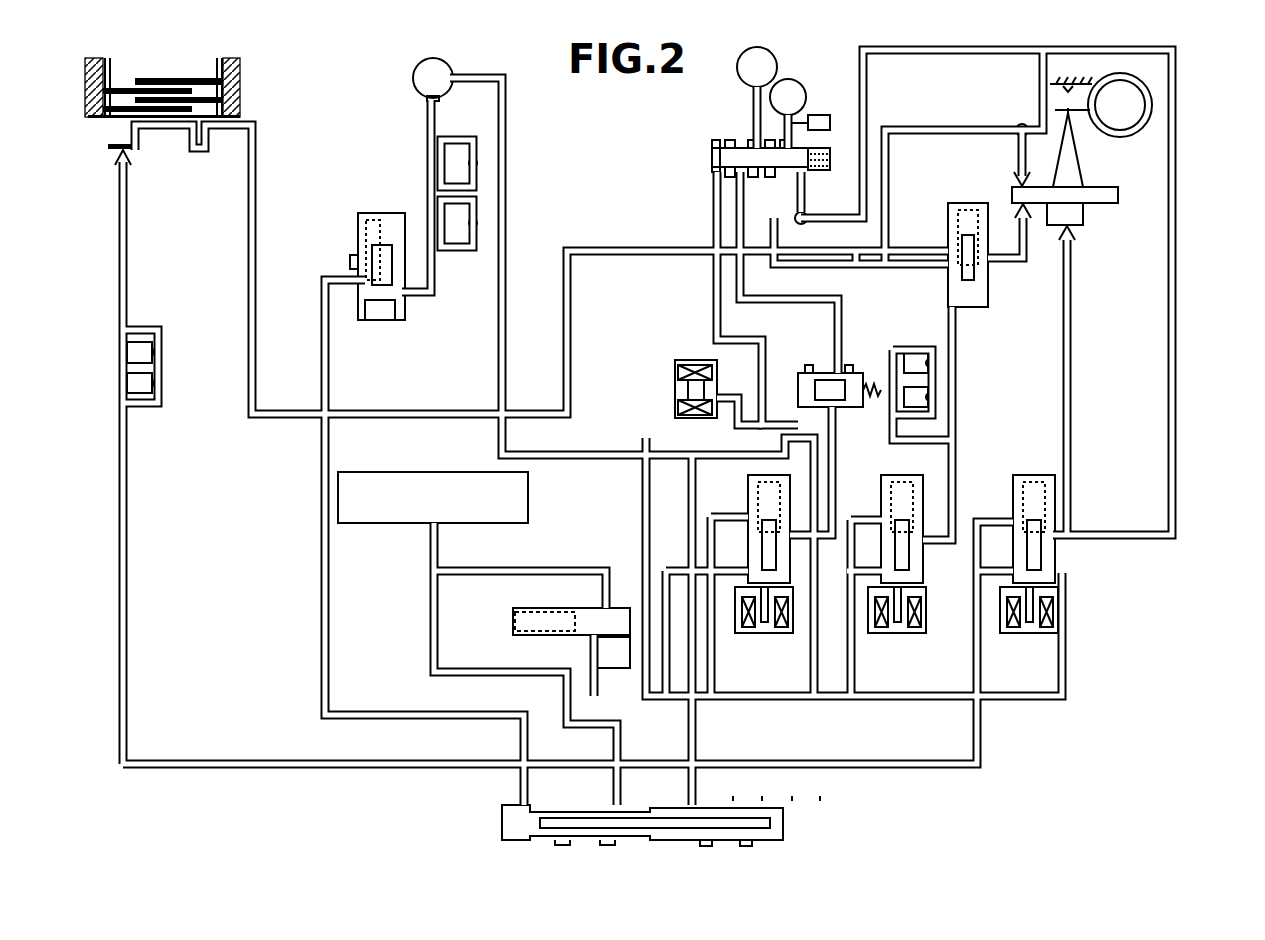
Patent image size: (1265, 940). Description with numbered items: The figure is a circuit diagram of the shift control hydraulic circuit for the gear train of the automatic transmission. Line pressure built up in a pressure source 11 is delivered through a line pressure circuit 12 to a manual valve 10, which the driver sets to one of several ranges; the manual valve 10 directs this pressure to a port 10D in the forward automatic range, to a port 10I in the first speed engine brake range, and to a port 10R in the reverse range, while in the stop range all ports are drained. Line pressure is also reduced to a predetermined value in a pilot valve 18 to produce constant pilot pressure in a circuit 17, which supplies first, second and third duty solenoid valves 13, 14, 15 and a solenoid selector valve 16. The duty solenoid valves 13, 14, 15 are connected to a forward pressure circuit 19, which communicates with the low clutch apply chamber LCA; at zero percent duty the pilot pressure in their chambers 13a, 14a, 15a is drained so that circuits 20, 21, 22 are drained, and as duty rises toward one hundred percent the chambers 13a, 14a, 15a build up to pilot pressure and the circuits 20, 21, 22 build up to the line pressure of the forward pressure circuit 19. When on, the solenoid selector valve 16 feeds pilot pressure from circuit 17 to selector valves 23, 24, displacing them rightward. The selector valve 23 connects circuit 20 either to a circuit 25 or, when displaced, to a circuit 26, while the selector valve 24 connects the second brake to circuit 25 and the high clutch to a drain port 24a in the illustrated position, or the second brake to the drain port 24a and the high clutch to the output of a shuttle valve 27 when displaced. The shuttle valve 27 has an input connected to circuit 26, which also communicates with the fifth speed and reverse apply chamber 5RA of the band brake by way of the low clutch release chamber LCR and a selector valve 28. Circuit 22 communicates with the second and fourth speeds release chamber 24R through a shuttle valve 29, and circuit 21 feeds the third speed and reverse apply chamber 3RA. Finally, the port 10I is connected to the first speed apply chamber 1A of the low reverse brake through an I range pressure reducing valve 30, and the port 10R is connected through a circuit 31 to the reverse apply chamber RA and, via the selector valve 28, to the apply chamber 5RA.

The apply chamber of the low clutch LCA is at (118, 152).
The release chamber of the low clutch LCR is at (207, 137).
The reverse apply chamber RA is at (458, 78).
The first speed apply chamber 1A is at (428, 98).
The I range pressure reducing valve 30 is at (353, 264).
The selector valve 24 is at (720, 133).
The drain port 24a is at (770, 183).
The second and fourth speeds release chamber 24R is at (1015, 186).
The circuit 25 is at (835, 297).
The circuit 26 is at (795, 266).
The shuttle valve 27 is at (812, 210).
The selector valve 28 is at (985, 312).
The shuttle valve 29 is at (1022, 123).
The third speed and reverse apply chamber 3RA is at (1080, 227).
The fifth speed and reverse apply chamber 5RA is at (1030, 225).
The solenoid selector valve 16 is at (684, 355).
The selector valve 23 is at (799, 368).
The circuit 20 is at (836, 492).
The circuit 21 is at (958, 492).
The circuit 22 is at (1180, 522).
The circuit 31 is at (708, 462).
The pilot pressure circuit 17 is at (642, 538).
The pressure source 11 is at (530, 505).
The line pressure circuit 12 is at (430, 655).
The pilot valve 18 is at (563, 610).
The forward pressure circuit 19 is at (312, 768).
The manual valve 10 is at (676, 837).
The I range port 10I is at (522, 805).
The D range port 10D is at (572, 806).
The R range port 10R is at (690, 805).
The chamber of the first duty solenoid valve 13a is at (790, 563).
The chamber of the second duty solenoid valve 14a is at (923, 563).
The chamber of the third duty solenoid valve 15a is at (1055, 572).
The first duty solenoid valve 13 is at (770, 636).
The second duty solenoid valve 14 is at (897, 636).
The third duty solenoid valve 15 is at (1029, 636).